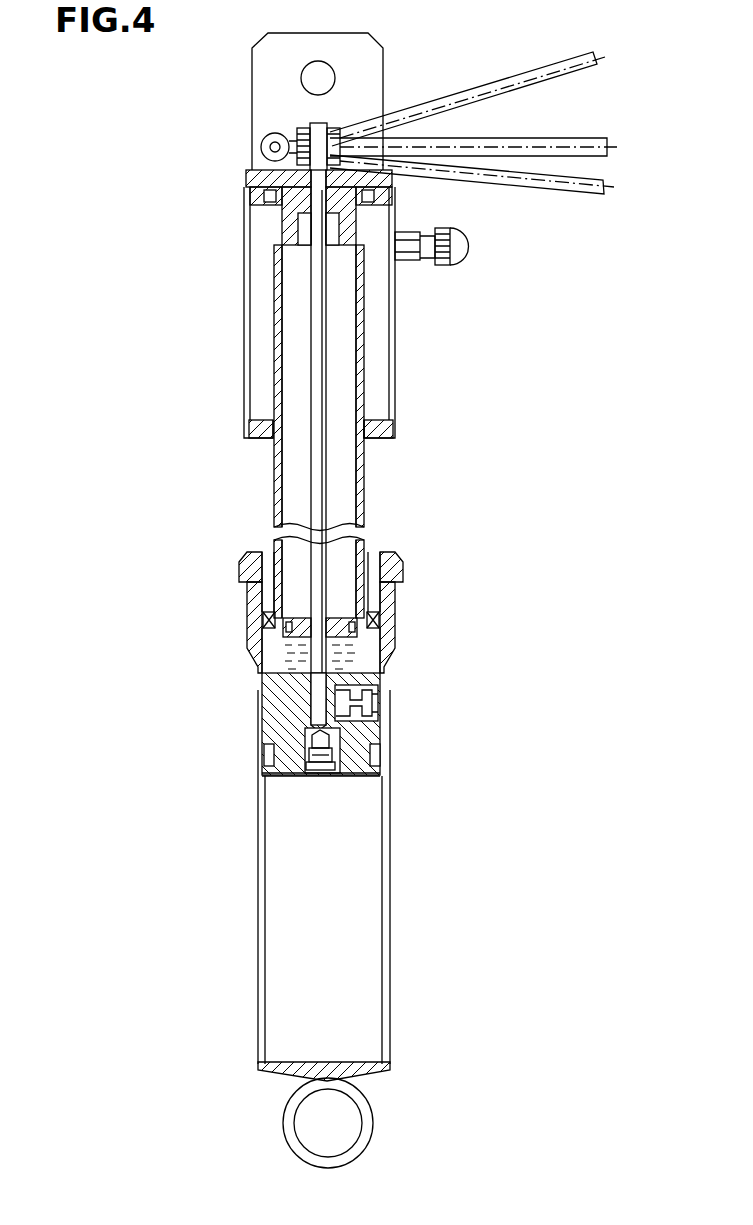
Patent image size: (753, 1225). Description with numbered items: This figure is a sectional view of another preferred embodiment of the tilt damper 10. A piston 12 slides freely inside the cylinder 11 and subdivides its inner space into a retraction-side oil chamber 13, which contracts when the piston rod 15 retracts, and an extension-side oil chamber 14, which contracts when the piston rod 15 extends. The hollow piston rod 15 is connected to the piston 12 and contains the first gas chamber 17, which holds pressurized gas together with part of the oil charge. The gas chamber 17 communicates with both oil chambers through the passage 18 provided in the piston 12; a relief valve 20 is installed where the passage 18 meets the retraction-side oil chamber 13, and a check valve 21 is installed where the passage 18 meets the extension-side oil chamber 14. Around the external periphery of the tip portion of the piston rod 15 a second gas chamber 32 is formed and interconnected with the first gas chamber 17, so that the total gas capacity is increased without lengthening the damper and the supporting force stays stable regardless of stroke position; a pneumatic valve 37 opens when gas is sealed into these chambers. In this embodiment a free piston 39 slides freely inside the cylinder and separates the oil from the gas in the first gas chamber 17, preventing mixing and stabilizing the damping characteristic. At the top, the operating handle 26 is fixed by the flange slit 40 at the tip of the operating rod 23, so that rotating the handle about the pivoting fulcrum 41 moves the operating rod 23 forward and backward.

The tilt damper 10 is at (398, 976).
The cylinder 11 is at (392, 838).
The piston 12 is at (285, 727).
The retraction-side oil chamber 13 is at (288, 840).
The extension-side oil chamber 14 is at (380, 692).
The piston rod 15 is at (278, 478).
The gas chamber 17 is at (350, 458).
The passage 18 is at (316, 722).
The relief valve 20 is at (280, 772).
The check valve 21 is at (384, 720).
The operating rod 23 is at (330, 488).
The operating handle 26 is at (600, 138).
The second gas chamber 32 is at (263, 386).
The pneumatic valve 37 is at (445, 266).
The free piston 39 is at (300, 624).
The flange slit 40 is at (300, 138).
The pivoting fulcrum 41 is at (262, 142).